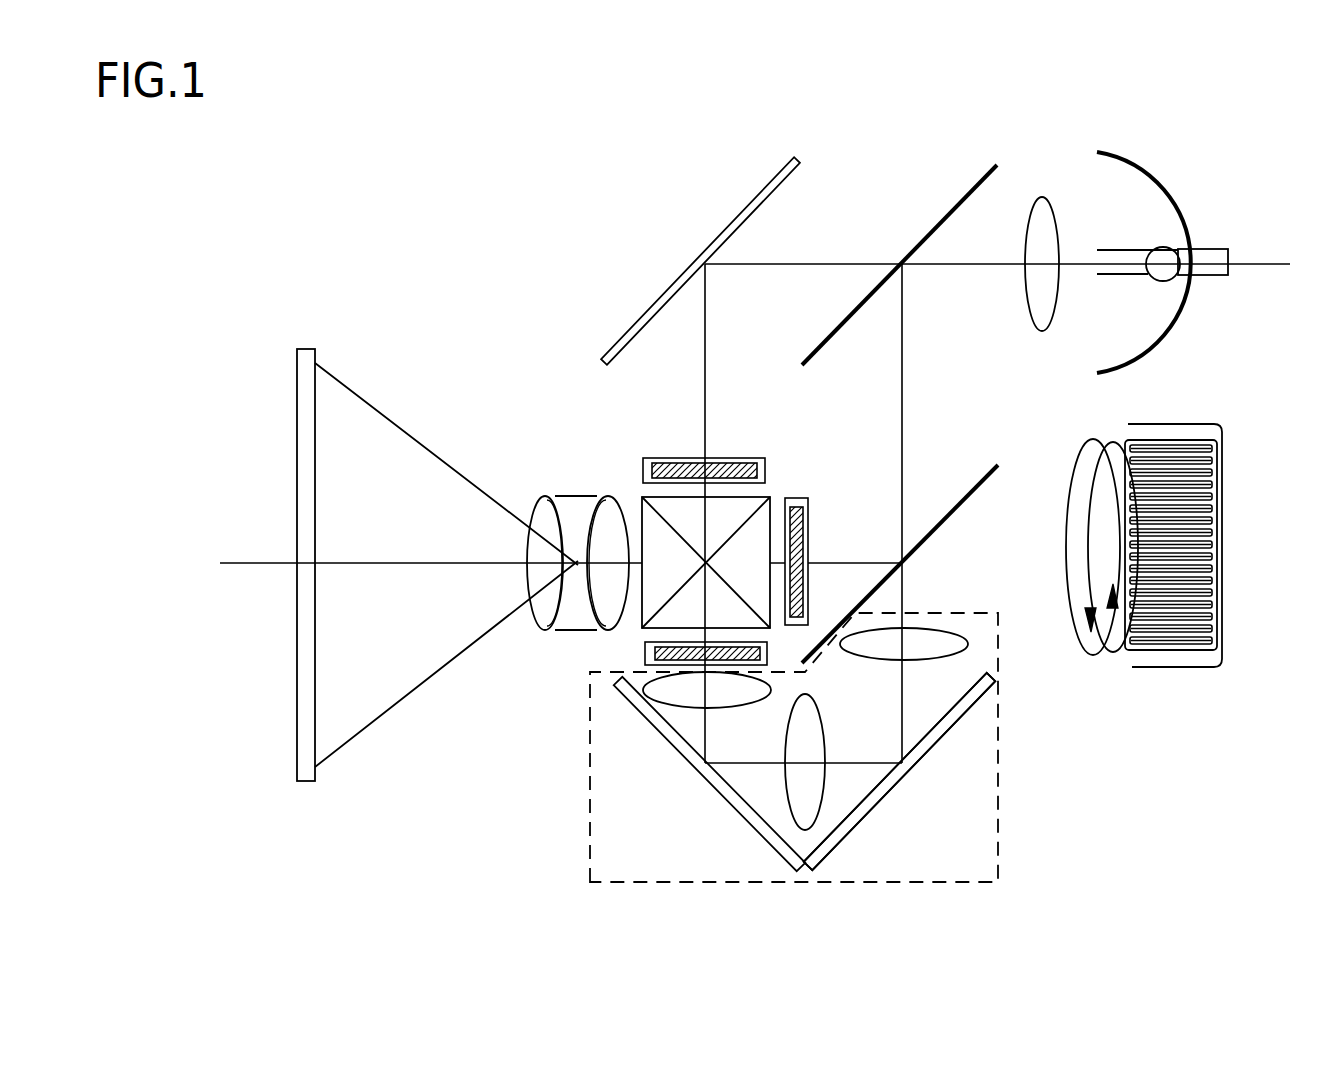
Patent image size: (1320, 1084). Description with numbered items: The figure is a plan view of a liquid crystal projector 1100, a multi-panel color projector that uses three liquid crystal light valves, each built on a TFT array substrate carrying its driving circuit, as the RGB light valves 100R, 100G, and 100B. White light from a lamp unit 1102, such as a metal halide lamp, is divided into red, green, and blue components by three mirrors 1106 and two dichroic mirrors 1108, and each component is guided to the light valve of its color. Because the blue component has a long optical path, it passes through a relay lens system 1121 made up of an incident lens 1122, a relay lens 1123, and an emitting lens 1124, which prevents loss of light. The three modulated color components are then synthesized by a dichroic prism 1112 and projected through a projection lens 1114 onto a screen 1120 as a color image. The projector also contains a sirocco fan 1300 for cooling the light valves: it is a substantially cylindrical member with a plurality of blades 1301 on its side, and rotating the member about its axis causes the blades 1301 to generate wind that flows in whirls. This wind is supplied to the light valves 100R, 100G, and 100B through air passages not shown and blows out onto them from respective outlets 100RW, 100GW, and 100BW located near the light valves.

The liquid crystal projector 1100 is at (1084, 101).
The lamp unit 1102 is at (1188, 302).
The mirrors 1106 is at (777, 164).
The dichroic mirrors 1108 is at (937, 227).
The dichroic prism 1112 is at (655, 545).
The projection lens 1114 is at (626, 496).
The screen 1120 is at (317, 652).
The relay lens system 1121 is at (998, 882).
The incident lens 1122 is at (968, 644).
The relay lens 1123 is at (858, 818).
The emitting lens 1124 is at (643, 693).
The sirocco fan 1300 is at (1222, 490).
The blades 1301 is at (1175, 623).
The R light valve 100R is at (772, 462).
The outlet 100RW is at (722, 460).
The G light valve 100G is at (800, 497).
The outlet 100GW is at (810, 557).
The B light valve 100B is at (645, 657).
The outlet 100BW is at (645, 651).